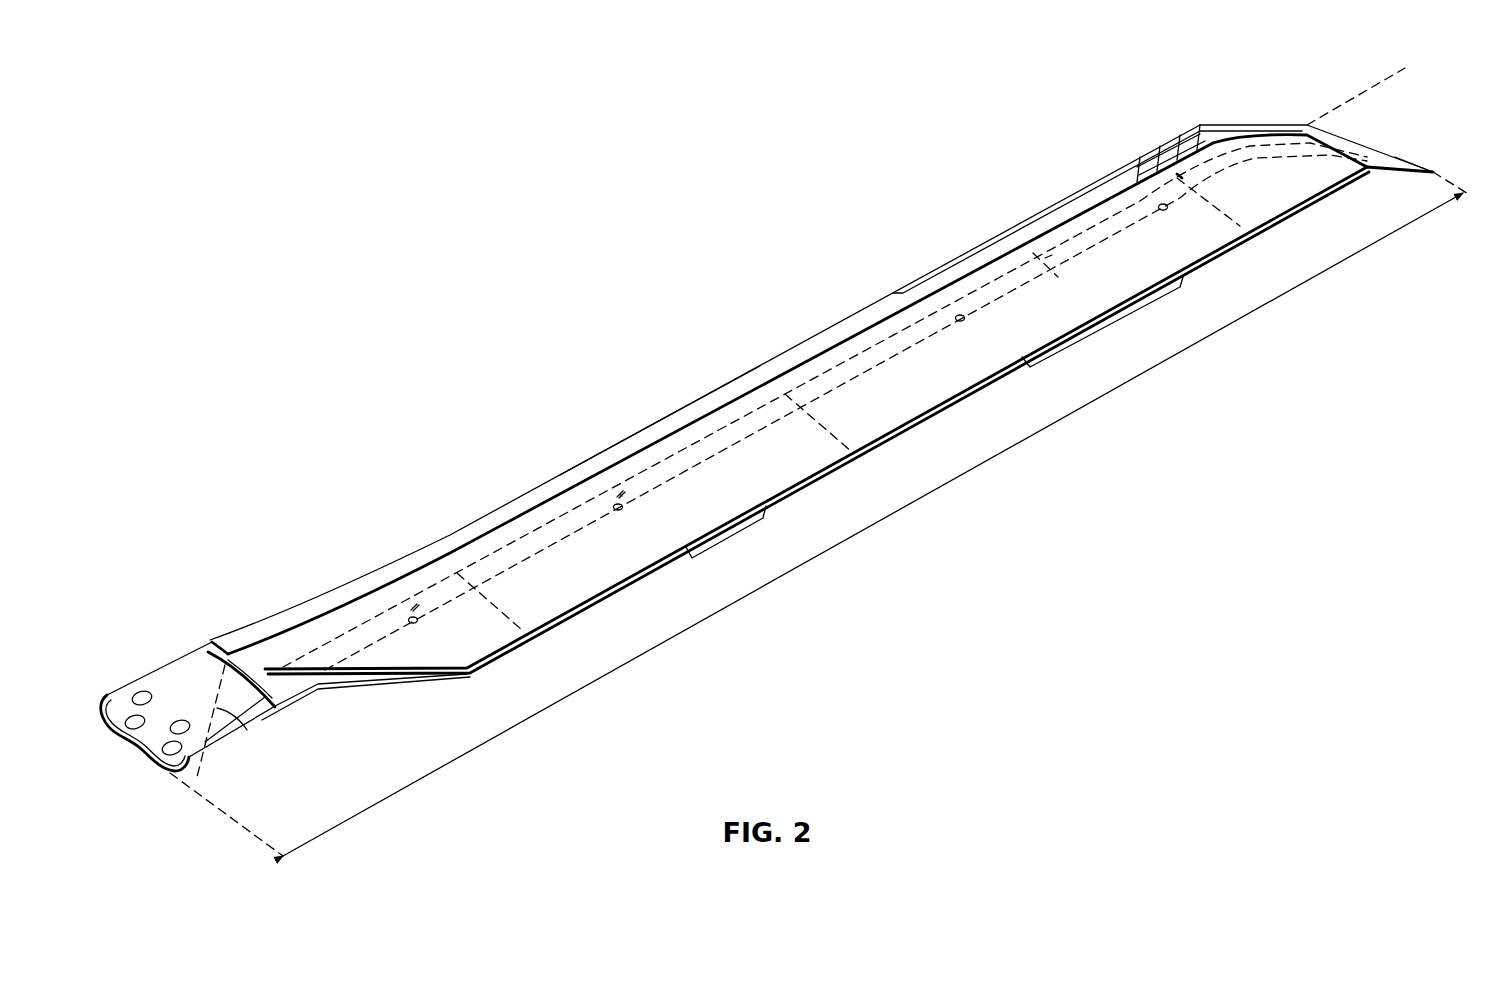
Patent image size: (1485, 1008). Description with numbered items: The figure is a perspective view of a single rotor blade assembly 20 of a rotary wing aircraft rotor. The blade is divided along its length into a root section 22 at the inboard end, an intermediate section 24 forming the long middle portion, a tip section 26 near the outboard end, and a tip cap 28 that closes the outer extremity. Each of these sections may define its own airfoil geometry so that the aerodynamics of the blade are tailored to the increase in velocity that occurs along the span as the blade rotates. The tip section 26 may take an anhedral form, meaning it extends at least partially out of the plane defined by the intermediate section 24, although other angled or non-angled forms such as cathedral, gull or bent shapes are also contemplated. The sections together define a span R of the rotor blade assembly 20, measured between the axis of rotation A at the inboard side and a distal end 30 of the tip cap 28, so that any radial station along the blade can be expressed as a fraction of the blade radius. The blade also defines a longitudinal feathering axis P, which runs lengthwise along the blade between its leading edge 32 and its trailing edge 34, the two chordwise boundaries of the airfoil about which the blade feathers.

The rotor blade assembly 20 is at (780, 318).
The root section 22 is at (232, 633).
The intermediate section 24 is at (733, 378).
The tip section 26 is at (1185, 122).
The tip cap 28 is at (1358, 128).
The distal end 30 is at (1405, 163).
The leading edge 32 is at (880, 293).
The trailing edge 34 is at (856, 448).
The axis of rotation A is at (247, 730).
The longitudinal feathering axis P is at (1348, 100).
The span R is at (858, 536).